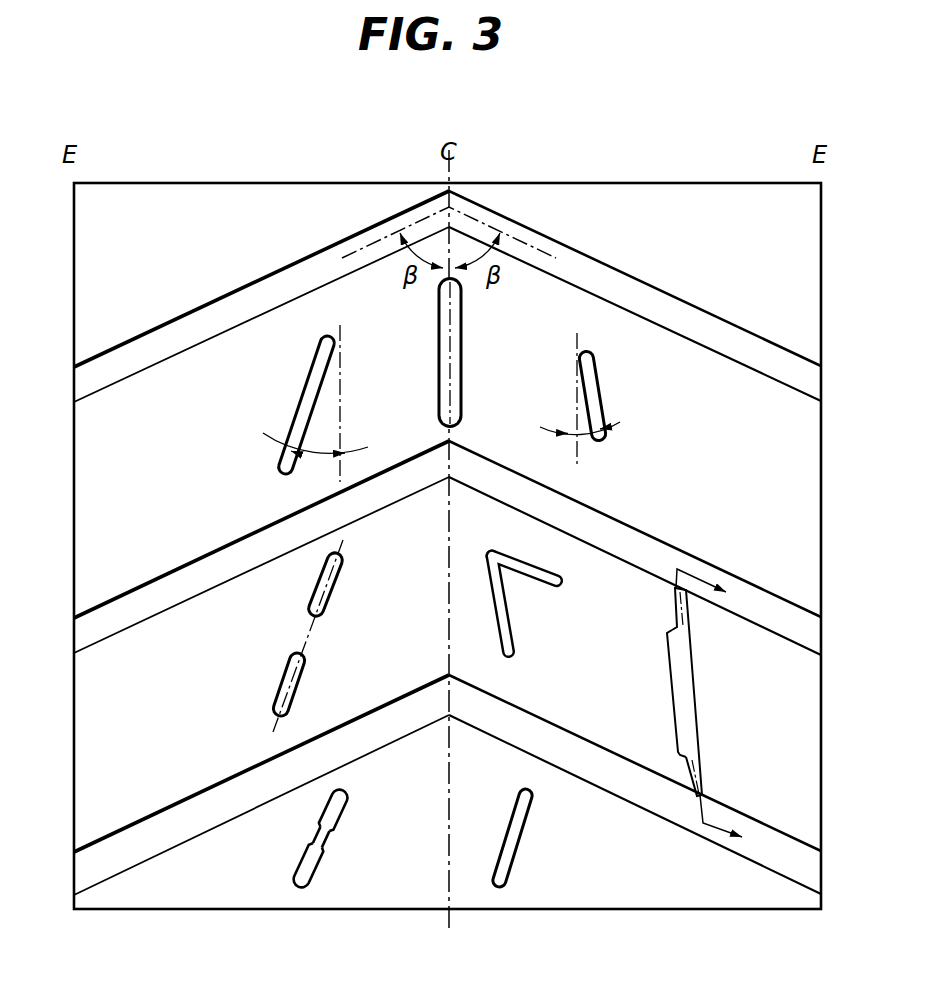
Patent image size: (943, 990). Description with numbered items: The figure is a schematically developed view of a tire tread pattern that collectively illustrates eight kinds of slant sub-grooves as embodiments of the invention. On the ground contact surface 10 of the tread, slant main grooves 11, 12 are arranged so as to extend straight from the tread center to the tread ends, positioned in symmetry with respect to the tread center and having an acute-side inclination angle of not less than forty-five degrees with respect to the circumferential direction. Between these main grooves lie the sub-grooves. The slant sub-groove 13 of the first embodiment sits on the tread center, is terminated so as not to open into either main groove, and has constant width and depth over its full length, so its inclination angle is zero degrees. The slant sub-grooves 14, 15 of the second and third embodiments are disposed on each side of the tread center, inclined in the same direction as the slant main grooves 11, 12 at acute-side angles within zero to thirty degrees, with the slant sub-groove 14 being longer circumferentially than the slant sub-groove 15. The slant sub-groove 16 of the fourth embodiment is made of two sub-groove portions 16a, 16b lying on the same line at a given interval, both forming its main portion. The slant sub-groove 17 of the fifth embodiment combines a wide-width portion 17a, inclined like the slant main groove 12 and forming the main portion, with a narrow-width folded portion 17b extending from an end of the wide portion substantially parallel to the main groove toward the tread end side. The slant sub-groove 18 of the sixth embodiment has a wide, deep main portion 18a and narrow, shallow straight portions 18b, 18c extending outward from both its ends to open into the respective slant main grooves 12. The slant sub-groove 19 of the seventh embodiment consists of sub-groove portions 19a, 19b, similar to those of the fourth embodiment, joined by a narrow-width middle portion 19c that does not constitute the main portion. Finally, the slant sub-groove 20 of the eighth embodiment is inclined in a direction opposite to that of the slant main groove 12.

The ground contact surface 10 is at (662, 207).
The slant main groove 11 is at (265, 278).
The slant main groove 12 is at (722, 345).
The slant sub-groove 13 is at (462, 345).
The slant sub-groove 14 is at (307, 398).
The slant sub-groove 15 is at (594, 382).
The slant sub-groove 16 is at (313, 636).
The sub-groove portion 16a is at (304, 670).
The sub-groove portion 16b is at (334, 577).
The slant sub-groove 17 is at (519, 595).
The wide-width portion 17a is at (501, 628).
The narrow-width folded portion 17b is at (537, 560).
The slant sub-groove 18 is at (693, 717).
The main portion 18a is at (672, 688).
The straight portion 18b is at (687, 617).
The straight portion 18c is at (699, 768).
The slant sub-groove 19 is at (325, 834).
The sub-groove portion 19a is at (316, 870).
The sub-groove portion 19b is at (344, 806).
The narrow-width middle portion 19c is at (329, 838).
The slant sub-groove 20 is at (513, 832).